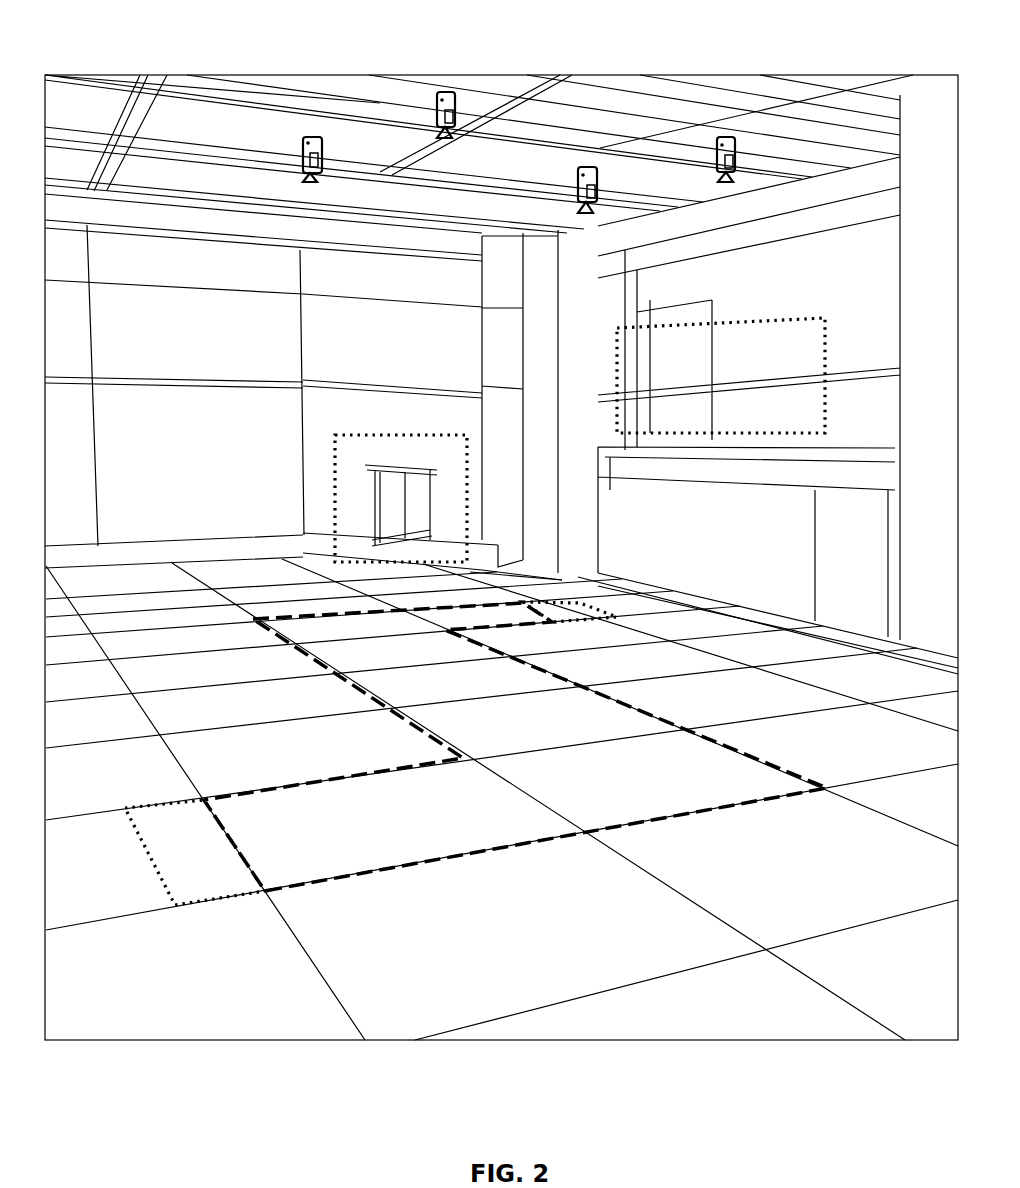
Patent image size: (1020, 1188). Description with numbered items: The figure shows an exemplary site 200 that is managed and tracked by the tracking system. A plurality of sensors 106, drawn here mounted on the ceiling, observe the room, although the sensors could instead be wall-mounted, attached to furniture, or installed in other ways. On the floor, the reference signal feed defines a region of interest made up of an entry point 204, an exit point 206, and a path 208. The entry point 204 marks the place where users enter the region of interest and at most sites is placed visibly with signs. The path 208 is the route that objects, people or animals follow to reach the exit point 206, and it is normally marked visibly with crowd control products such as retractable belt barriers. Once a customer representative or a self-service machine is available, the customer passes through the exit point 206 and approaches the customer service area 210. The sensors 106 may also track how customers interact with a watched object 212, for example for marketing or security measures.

The environment 200 is at (514, 60).
The sensors 106 is at (322, 170).
The entry point 204 is at (195, 852).
The exit point 206 is at (579, 608).
The path 208 is at (515, 747).
The customer service area 210 is at (721, 375).
The watched object 212 is at (401, 498).